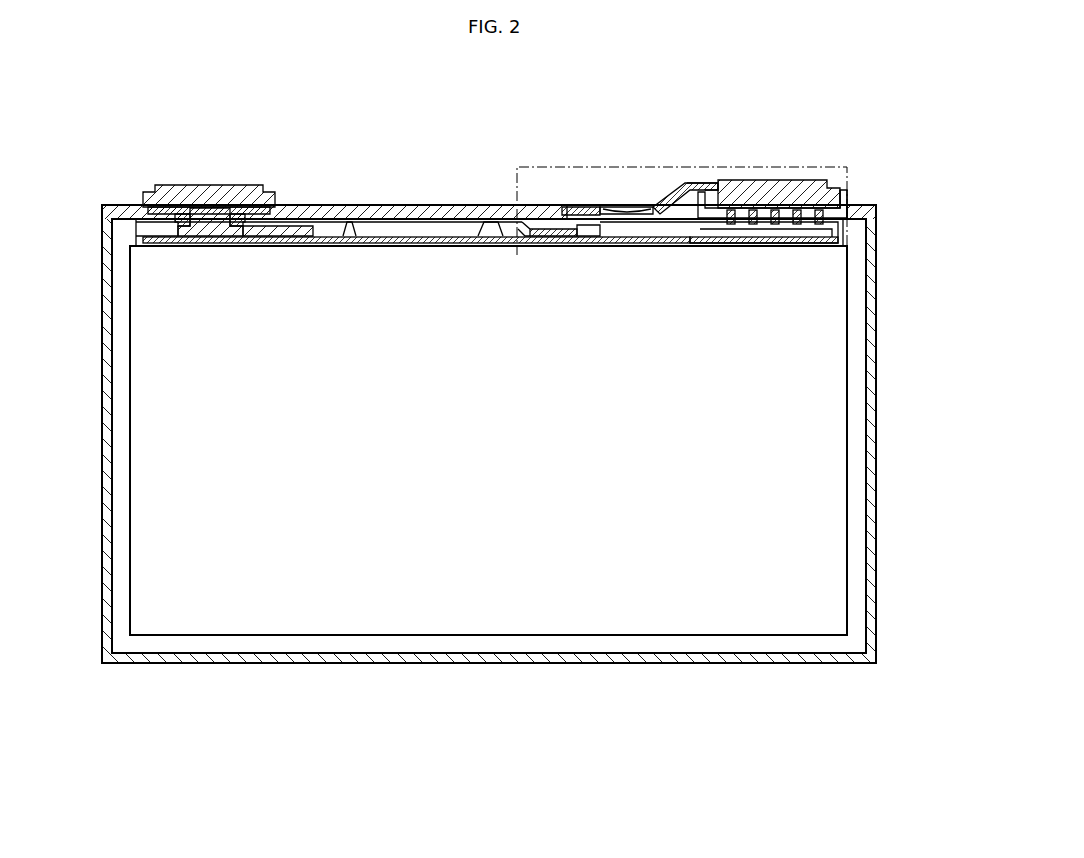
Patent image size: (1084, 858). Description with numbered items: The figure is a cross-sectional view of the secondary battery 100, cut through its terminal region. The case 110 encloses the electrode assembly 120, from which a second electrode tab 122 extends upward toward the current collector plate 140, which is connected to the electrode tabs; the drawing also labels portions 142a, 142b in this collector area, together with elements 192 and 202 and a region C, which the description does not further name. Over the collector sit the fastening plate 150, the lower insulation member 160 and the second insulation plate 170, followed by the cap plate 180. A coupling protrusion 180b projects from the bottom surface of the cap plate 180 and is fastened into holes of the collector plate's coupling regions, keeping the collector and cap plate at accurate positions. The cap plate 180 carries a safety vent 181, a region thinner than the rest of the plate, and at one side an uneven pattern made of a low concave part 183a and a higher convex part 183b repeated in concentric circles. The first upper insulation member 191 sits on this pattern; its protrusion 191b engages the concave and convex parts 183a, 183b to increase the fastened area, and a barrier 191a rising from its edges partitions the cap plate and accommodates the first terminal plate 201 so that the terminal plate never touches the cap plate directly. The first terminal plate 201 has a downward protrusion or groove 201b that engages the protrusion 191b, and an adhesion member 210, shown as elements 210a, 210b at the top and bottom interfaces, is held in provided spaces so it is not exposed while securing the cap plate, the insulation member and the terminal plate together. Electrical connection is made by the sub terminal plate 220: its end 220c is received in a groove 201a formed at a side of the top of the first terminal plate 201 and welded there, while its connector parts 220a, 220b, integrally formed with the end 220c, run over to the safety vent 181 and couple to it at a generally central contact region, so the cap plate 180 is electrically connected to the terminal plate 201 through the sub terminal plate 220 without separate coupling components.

The secondary battery 100 is at (82, 99).
The case 110 is at (877, 420).
The electrode assembly 120 is at (748, 615).
The second electrode tab 122 is at (303, 247).
The current collector plate 140 is at (236, 277).
The collector tab 142a is at (257, 247).
The rivet terminal 142b is at (186, 248).
The fastening plate 150 is at (191, 185).
The lower insulation member 160 is at (136, 229).
The second insulation plate 170 is at (291, 216).
The cap plate 180 is at (878, 213).
The coupling protrusion 180b is at (697, 238).
The safety vent 181 is at (623, 223).
The concave part 183a is at (803, 220).
The convex part 183b is at (778, 221).
The first upper insulation member 191 is at (853, 198).
The barrier 191a is at (849, 172).
The protrusion 191b is at (850, 226).
The gasket 192 is at (266, 214).
The first terminal plate 201 is at (803, 193).
The groove 201a is at (713, 182).
The protrusion or groove 201b is at (832, 174).
The upper insulating member 202 is at (233, 206).
The adhesion member 210 is at (784, 136).
The element of the adhesion member 210a is at (755, 180).
The element of the adhesion member 210b is at (770, 182).
The sub terminal plate 220 is at (635, 150).
The connector part 220a is at (590, 205).
The connector part 220b is at (650, 205).
The end 220c is at (693, 183).
The region C is at (518, 164).